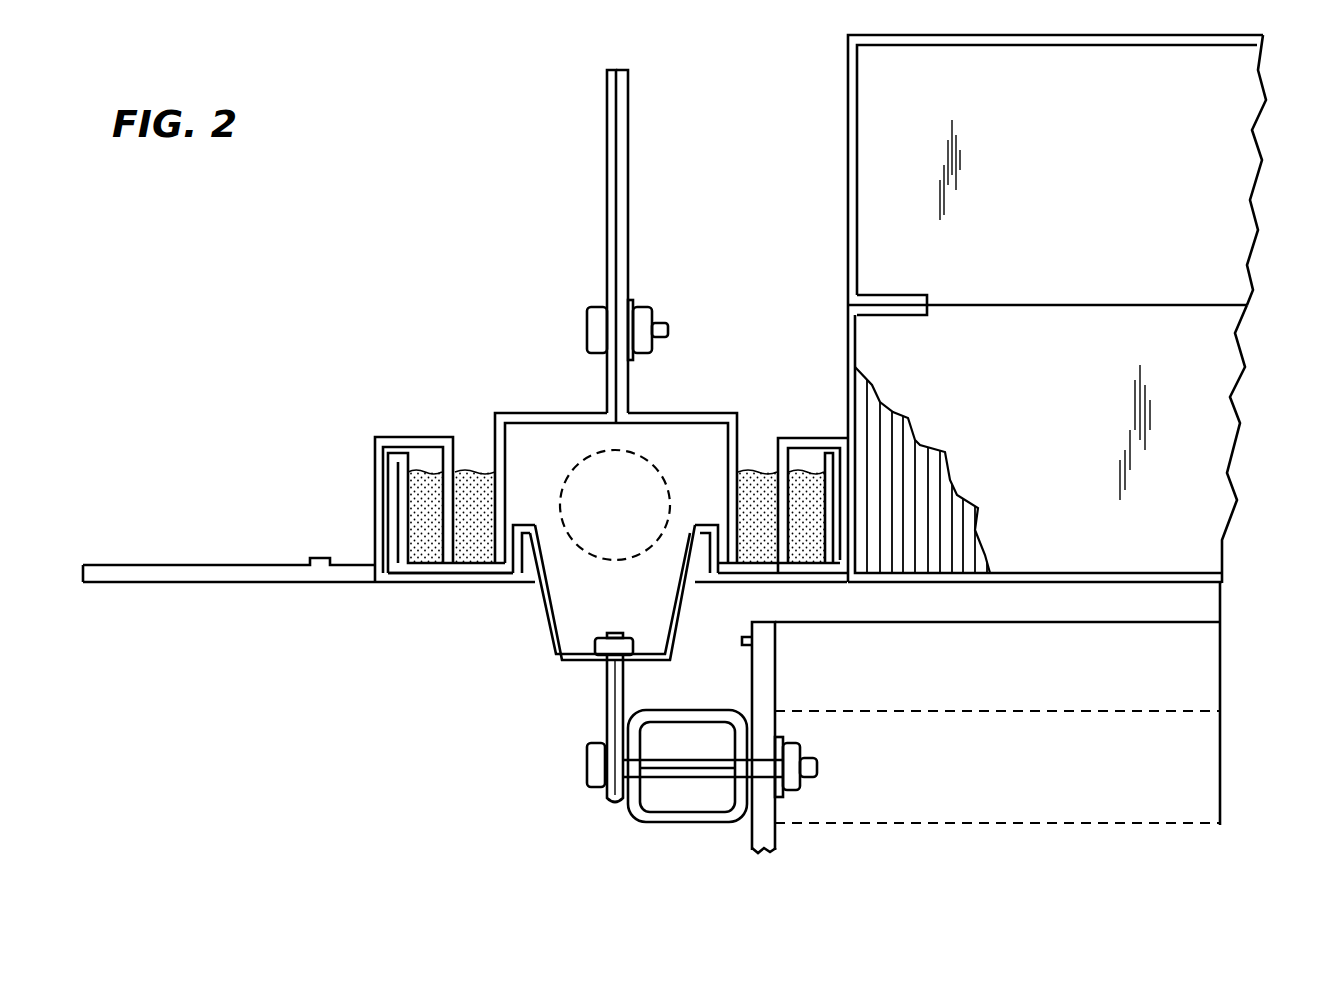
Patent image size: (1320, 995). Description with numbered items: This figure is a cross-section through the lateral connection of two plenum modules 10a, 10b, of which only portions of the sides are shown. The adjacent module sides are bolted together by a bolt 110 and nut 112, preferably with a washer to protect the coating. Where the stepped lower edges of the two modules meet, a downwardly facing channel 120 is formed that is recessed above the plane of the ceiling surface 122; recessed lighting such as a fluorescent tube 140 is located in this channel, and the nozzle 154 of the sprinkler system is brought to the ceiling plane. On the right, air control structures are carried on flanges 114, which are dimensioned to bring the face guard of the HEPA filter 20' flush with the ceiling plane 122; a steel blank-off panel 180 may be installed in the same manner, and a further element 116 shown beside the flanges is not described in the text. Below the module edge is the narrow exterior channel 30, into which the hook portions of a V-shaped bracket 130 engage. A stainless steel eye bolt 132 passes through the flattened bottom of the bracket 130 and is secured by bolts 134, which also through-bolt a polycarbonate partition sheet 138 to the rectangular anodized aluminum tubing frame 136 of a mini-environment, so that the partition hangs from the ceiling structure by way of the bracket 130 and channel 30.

The plenum module 10a is at (628, 115).
The plenum module 10b is at (607, 115).
The bolt 110 is at (588, 313).
The nut 112 is at (646, 307).
The flanges 114 is at (839, 435).
The gasket retainer leg 116 is at (801, 470).
The downwardly facing channel 120 is at (655, 430).
The plane of the ceiling surface 122 is at (1222, 590).
The bracket 130 is at (558, 643).
The eye bolt 132 is at (607, 685).
The bolt 134 is at (587, 760).
The frame 136 is at (662, 822).
The partition sheet 138 is at (805, 623).
The fluorescent tube 140 is at (583, 459).
The nozzle 154 is at (590, 553).
The blank-off panel 180 is at (223, 565).
The filter 20' is at (1047, 441).
The channel 30 is at (720, 553).